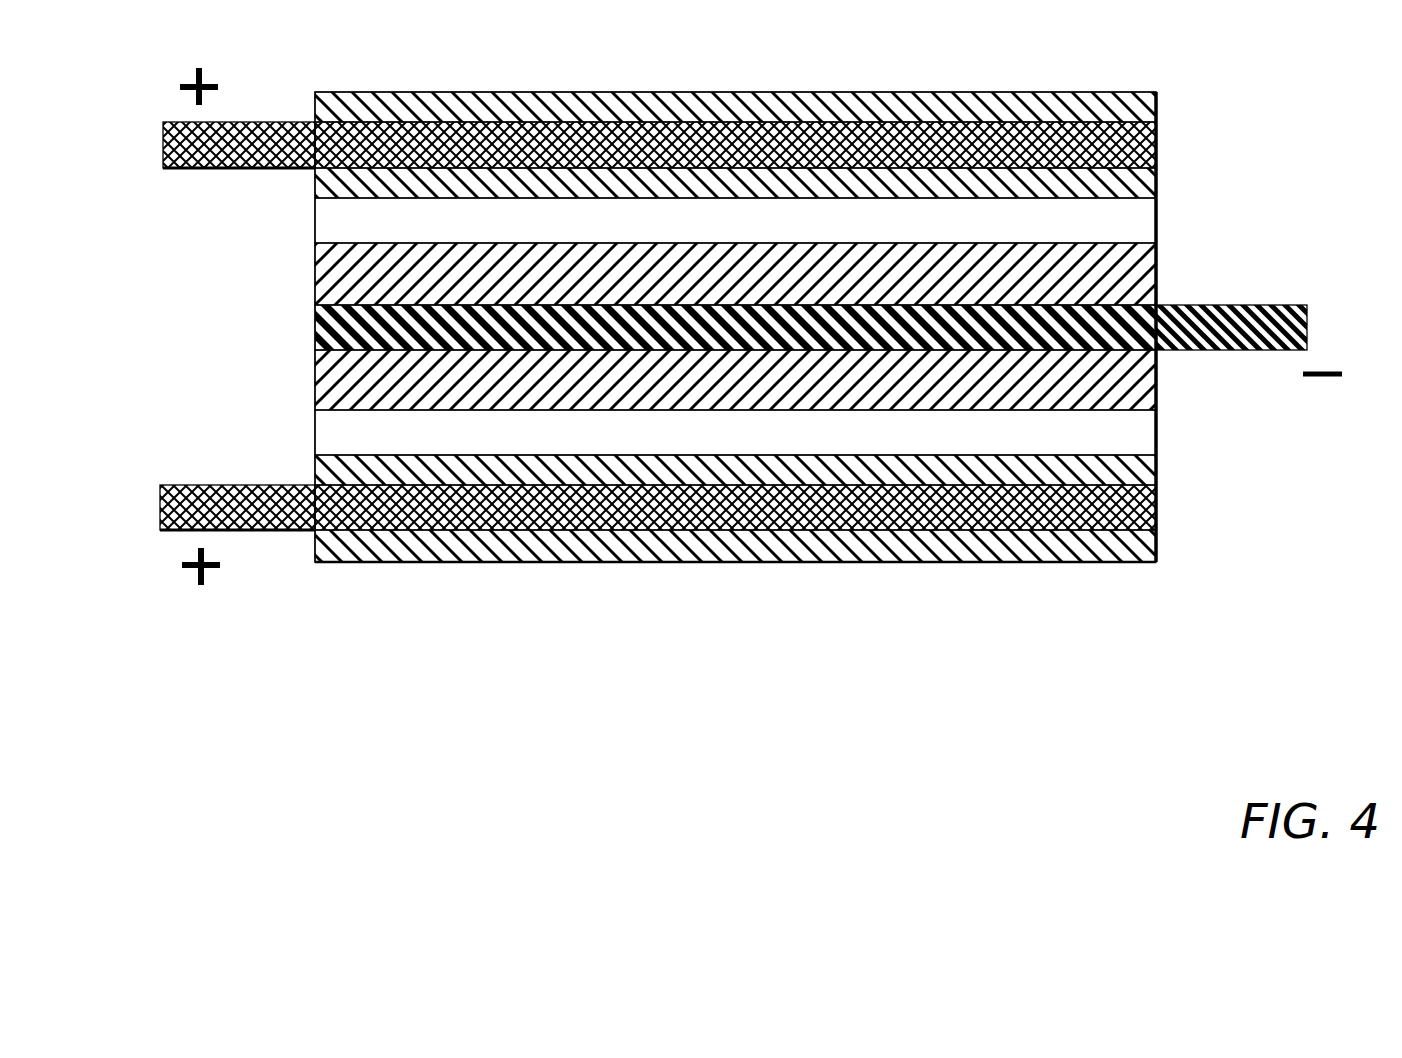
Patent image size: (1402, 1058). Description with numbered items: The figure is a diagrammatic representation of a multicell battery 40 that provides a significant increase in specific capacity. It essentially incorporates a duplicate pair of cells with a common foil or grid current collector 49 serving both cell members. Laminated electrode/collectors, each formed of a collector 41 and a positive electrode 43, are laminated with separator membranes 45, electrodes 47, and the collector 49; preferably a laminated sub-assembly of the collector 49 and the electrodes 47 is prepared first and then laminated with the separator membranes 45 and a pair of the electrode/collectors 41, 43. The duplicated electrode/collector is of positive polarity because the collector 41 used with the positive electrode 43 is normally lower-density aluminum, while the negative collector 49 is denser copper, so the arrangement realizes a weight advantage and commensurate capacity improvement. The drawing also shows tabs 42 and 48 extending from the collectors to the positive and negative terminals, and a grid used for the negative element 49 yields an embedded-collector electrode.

The battery 40 is at (603, 615).
The collector 41 is at (1158, 150).
The positive tab 42 is at (163, 150).
The positive electrode 43 is at (1148, 108).
The separator membrane 45 is at (1156, 228).
The electrode 47 is at (1147, 383).
The negative tab 48 is at (1277, 305).
The collector 49 is at (317, 330).